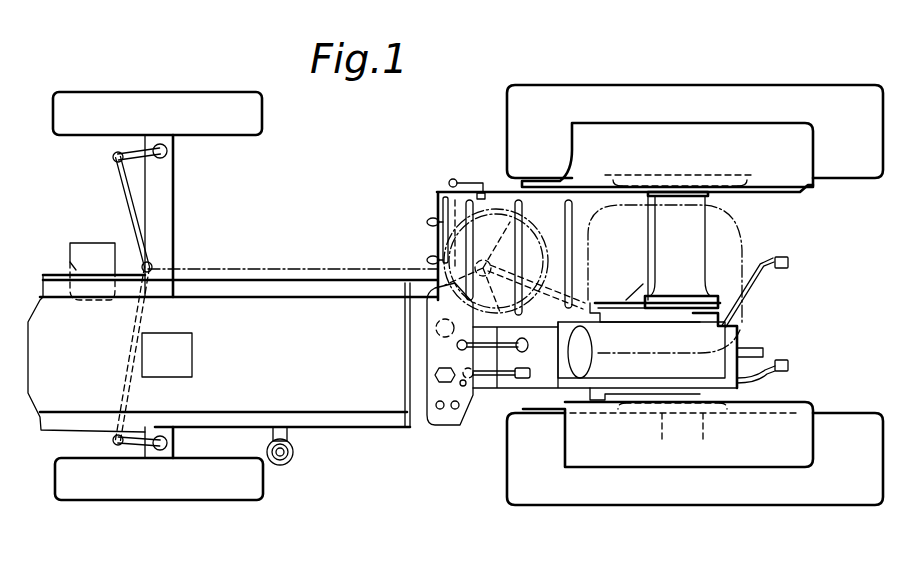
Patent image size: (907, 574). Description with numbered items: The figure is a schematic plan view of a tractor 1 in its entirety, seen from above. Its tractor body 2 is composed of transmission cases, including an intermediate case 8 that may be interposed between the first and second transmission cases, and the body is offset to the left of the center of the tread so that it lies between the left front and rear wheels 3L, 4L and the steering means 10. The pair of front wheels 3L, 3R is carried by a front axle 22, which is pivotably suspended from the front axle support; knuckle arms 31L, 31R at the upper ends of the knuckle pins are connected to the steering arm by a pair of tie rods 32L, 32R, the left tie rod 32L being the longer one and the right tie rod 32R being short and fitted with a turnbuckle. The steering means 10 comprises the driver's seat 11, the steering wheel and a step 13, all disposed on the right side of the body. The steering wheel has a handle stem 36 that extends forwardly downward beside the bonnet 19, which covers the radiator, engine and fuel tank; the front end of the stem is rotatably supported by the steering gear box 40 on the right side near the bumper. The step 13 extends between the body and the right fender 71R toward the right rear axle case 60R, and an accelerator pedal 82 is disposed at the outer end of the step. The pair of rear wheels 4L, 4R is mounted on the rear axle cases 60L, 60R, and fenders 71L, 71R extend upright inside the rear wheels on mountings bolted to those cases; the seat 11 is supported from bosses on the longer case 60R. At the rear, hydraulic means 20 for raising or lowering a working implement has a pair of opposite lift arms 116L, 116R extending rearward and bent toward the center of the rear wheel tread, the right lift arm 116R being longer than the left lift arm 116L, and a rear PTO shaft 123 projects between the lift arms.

The tractor 1 is at (400, 452).
The tractor body 2 is at (498, 393).
The right front wheel 3R is at (218, 126).
The left front wheel 3L is at (228, 488).
The right rear wheel 4R is at (577, 95).
The left rear wheel 4L is at (579, 505).
The intermediate case 8 is at (543, 372).
The steering means 10 is at (433, 237).
The driver's seat 11 is at (740, 236).
The step 13 is at (498, 193).
The bonnet 19 is at (323, 400).
The hydraulic means 20 is at (738, 335).
The front axle 22 is at (176, 227).
The right knuckle arm 31R is at (137, 158).
The left knuckle arm 31L is at (140, 435).
The right tie rod 32R is at (120, 185).
The left tie rod 32L is at (127, 388).
The handle stem 36 is at (302, 270).
The steering gear box 40 is at (83, 262).
The right rear axle case 60R is at (667, 244).
The left rear axle case 60L is at (702, 425).
The right fender 71R is at (722, 137).
The left fender 71L is at (697, 458).
The accelerator pedal 82 is at (455, 180).
The right lift arm 116R is at (765, 263).
The left lift arm 116L is at (775, 378).
The rear PTO shaft 123 is at (763, 351).